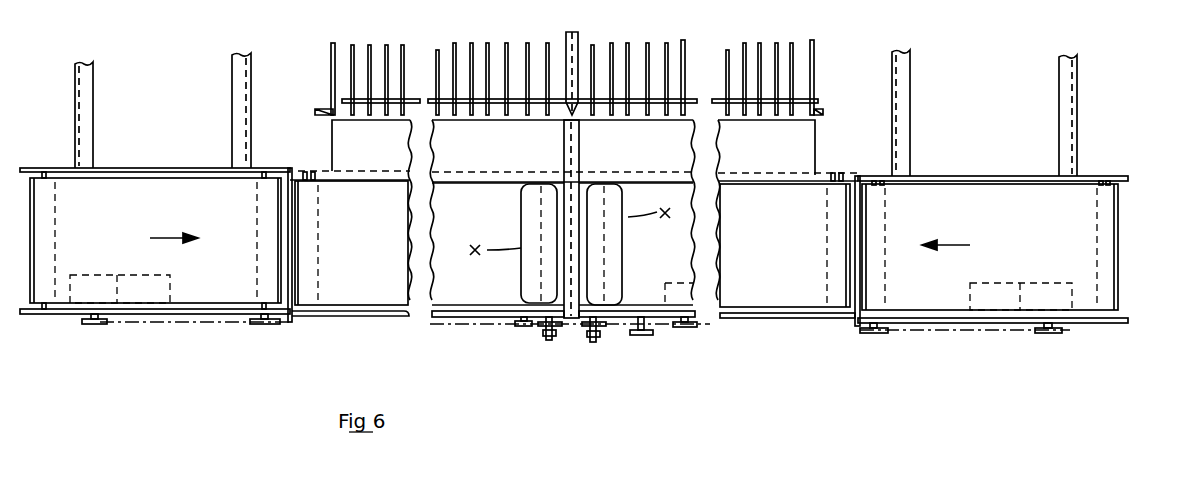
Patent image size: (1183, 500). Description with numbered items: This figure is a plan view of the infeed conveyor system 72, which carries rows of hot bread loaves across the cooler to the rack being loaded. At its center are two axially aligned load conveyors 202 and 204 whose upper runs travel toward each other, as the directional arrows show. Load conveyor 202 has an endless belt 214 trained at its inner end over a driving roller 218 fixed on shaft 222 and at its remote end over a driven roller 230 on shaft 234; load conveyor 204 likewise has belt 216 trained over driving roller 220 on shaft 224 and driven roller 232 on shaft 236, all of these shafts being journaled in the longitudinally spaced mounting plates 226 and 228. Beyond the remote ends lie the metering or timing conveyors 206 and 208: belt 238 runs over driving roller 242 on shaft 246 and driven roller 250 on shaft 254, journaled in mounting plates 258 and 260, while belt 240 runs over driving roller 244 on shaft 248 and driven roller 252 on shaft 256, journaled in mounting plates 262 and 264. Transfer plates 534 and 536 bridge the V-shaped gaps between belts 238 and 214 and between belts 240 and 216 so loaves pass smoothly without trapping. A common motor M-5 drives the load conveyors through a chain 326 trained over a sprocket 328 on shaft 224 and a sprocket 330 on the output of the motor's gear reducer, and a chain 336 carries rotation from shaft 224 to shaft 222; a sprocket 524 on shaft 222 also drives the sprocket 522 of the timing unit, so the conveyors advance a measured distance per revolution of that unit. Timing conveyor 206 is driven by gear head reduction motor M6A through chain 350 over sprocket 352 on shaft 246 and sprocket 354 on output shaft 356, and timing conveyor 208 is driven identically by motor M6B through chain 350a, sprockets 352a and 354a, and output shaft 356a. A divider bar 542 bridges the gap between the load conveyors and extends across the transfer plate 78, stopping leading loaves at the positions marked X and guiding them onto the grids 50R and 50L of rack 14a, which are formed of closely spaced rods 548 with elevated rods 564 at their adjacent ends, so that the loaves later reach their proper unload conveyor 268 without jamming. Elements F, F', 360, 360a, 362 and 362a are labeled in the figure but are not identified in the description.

The column flange F is at (574, 115).
The column flange F' is at (576, 113).
The rack 14a is at (818, 63).
The grid 50L is at (454, 42).
The grid 50R is at (687, 28).
The infeed conveyor system 72 is at (1126, 207).
The transfer plate 78 is at (798, 151).
The load conveyor 202 is at (366, 322).
The load conveyor 204 is at (822, 324).
The metering conveyor 206 is at (200, 322).
The metering conveyor 208 is at (977, 328).
The endless belt 214 is at (445, 293).
The endless belt 216 is at (782, 300).
The driving roller 218 is at (541, 231).
The driving roller 220 is at (607, 254).
The shaft 222 is at (548, 310).
The shaft 224 is at (597, 309).
The mounting plate 226 is at (327, 316).
The mounting plate 228 is at (300, 171).
The driven roller 230 is at (318, 263).
The driven roller 232 is at (826, 240).
The shaft 234 is at (308, 305).
The shaft 236 is at (826, 310).
The endless belt 238 is at (188, 294).
The endless belt 240 is at (932, 302).
The driving roller 242 is at (256, 252).
The driving roller 244 is at (885, 288).
The shaft 246 is at (262, 307).
The shaft 248 is at (878, 181).
The driven roller 250 is at (55, 244).
The driven roller 252 is at (1096, 238).
The shaft 254 is at (50, 175).
The shaft 256 is at (1096, 183).
The mounting plate 258 is at (62, 318).
The mounting plate 260 is at (152, 167).
The mounting plate 262 is at (1088, 324).
The mounting plate 264 is at (1005, 176).
The unload conveyor 268 is at (505, 4).
The chain 326 is at (671, 331).
The sprocket 328 is at (599, 323).
The sprocket 330 is at (690, 328).
The chain 336 is at (570, 343).
The chain 350 is at (236, 324).
The chain 350a is at (950, 328).
The sprocket 352 is at (256, 326).
The sprocket 352a is at (877, 334).
The sprocket 354 is at (97, 326).
The sprocket 354a is at (1057, 332).
The output shaft 356 is at (99, 318).
The output shaft 356a is at (1067, 330).
The pin 360 is at (364, 0).
The pin 360a is at (822, 4).
The pin 362 is at (337, 0).
The pin 362a is at (825, 4).
The sprocket 522 is at (517, 328).
The sprocket 524 is at (540, 323).
The transfer plate 534 is at (288, 316).
The transfer plate 536 is at (856, 322).
The divider bar 542 is at (582, 147).
The rods 548 is at (547, 42).
The rod 564 is at (578, 31).
The gear head reduction motor M6A is at (143, 272).
The gear head reduction motor M6B is at (986, 281).
The motor M-5 is at (685, 283).